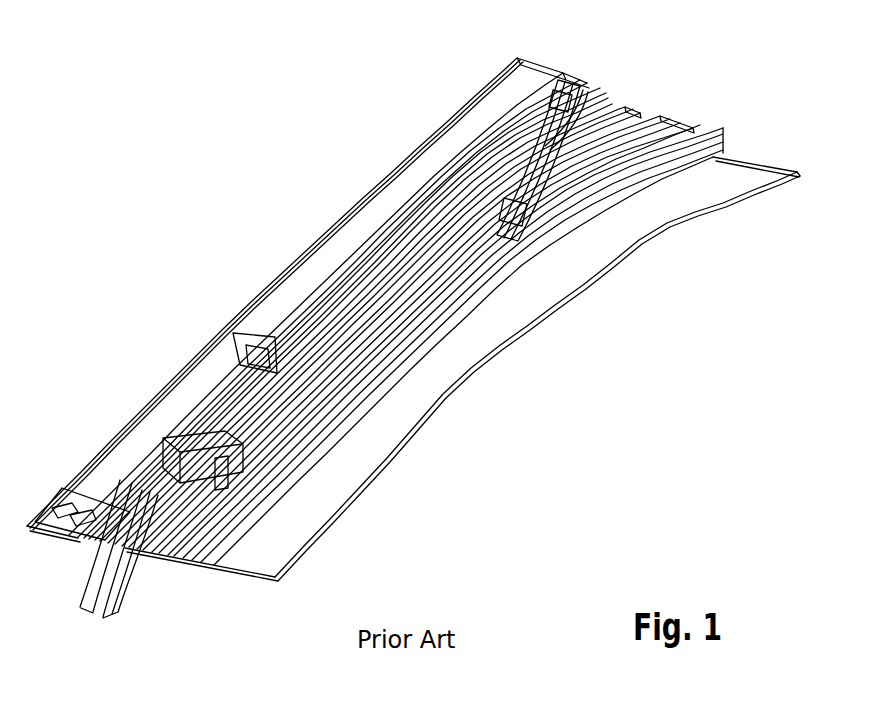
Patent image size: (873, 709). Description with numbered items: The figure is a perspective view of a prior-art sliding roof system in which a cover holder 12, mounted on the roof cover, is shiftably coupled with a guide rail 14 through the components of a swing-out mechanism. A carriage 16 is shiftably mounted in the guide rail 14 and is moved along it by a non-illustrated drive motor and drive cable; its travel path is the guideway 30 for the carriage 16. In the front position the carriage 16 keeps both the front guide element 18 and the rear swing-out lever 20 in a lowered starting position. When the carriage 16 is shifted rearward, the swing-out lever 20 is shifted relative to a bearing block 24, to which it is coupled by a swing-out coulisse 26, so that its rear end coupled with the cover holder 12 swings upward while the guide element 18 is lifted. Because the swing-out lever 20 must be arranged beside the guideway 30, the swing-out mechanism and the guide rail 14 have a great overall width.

The cover holder 12 is at (320, 267).
The guide rail 14 is at (465, 337).
The carriage 16 is at (199, 440).
The guide element 18 is at (130, 490).
The swing-out lever 20 is at (578, 92).
The bearing block 24 is at (545, 197).
The swing-out coulisse 26 is at (560, 143).
The guideway for the carriage 30 is at (482, 215).